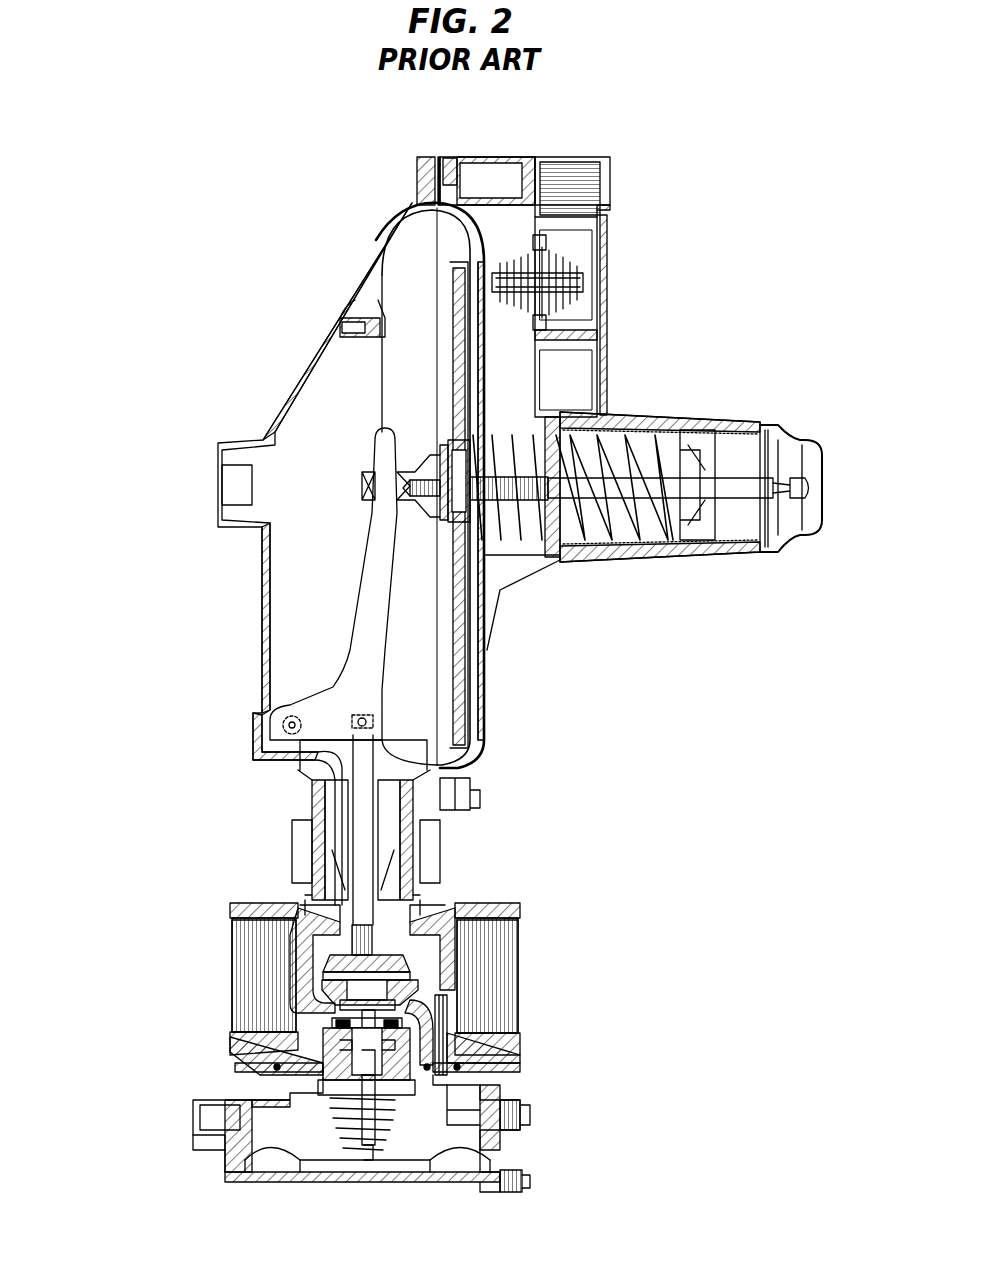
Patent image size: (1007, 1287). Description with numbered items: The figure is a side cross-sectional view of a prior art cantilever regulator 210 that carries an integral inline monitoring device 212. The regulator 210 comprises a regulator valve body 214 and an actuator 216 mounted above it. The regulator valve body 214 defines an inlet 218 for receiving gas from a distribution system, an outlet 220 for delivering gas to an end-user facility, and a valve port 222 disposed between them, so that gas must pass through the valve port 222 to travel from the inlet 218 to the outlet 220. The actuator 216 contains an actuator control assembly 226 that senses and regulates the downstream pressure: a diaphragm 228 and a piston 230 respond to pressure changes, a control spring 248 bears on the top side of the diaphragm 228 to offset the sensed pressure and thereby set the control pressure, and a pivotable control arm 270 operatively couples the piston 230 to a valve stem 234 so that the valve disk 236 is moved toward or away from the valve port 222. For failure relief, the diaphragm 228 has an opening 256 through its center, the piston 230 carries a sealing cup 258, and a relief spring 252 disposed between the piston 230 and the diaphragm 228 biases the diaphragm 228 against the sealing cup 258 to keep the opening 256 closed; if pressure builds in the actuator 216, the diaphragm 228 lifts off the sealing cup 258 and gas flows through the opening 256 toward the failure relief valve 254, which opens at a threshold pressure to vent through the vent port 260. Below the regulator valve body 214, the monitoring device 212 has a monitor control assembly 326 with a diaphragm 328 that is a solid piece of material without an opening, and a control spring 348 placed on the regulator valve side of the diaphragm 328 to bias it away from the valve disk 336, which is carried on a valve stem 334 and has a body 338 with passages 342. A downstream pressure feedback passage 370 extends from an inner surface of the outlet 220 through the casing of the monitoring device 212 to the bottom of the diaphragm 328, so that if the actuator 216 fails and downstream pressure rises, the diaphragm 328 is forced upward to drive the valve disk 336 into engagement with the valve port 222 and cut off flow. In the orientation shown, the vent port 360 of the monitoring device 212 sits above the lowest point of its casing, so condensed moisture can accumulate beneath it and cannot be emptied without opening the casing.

The cantilever regulator 210 is at (252, 145).
The integral inline monitoring device 212 is at (200, 1195).
The regulator valve body 214 is at (158, 905).
The actuator 216 is at (373, 220).
The inlet 218 is at (230, 912).
The outlet 220 is at (522, 910).
The valve port 222 is at (335, 958).
The actuator control assembly 226 is at (515, 562).
The diaphragm 228 is at (450, 282).
The piston 230 is at (725, 492).
The valve stem 234 is at (360, 783).
The valve disk 236 is at (395, 955).
The control spring 248 is at (695, 428).
The relief spring 252 is at (545, 530).
The failure relief valve 254 is at (560, 275).
The opening 256 is at (580, 425).
The sealing cup 258 is at (435, 462).
The vent port 260 is at (583, 160).
The pivotable control arm 270 is at (368, 598).
The monitor control assembly 326 is at (505, 1150).
The diaphragm 328 is at (318, 1172).
The valve stem 334 is at (365, 1120).
The valve disk 336 is at (405, 1025).
The body 338 is at (330, 1078).
The passages 342 is at (450, 1060).
The control spring 348 is at (405, 1118).
The vent port 360 is at (232, 1105).
The downstream pressure feedback passage 370 is at (485, 1112).